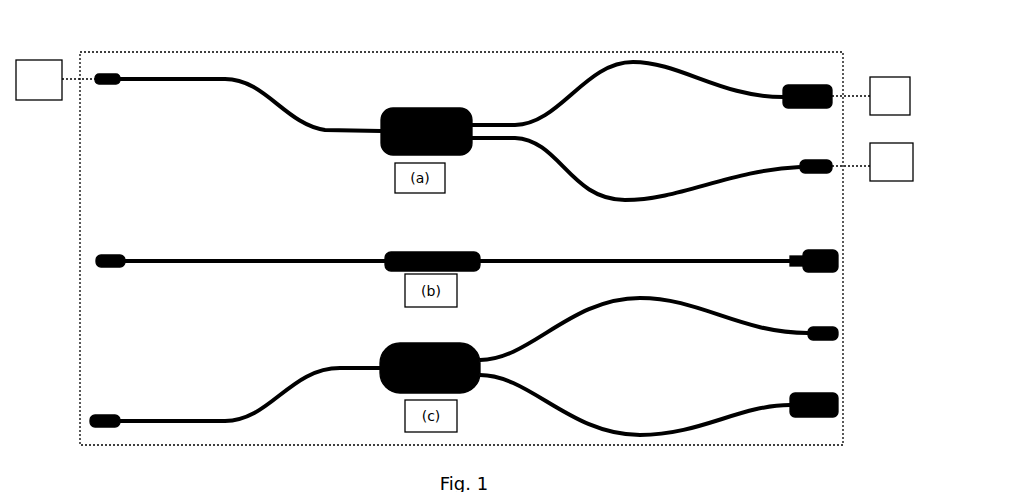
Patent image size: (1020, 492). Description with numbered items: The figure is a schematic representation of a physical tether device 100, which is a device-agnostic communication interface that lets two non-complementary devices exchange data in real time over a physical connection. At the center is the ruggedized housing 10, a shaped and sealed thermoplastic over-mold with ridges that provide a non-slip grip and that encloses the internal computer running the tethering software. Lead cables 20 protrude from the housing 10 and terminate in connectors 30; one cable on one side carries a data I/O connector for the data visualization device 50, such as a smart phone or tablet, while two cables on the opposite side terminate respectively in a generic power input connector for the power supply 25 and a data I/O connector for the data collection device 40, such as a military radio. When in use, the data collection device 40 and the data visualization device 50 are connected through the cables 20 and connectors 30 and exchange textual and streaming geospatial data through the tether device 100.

The physical tether device 100 is at (323, 99).
The ruggedized housing 10 is at (415, 110).
The lead cables 20 is at (287, 121).
The connectors 30 is at (105, 83).
The data visualization device 50 is at (37, 60).
The power supply 25 is at (890, 77).
The data collection device 40 is at (896, 181).